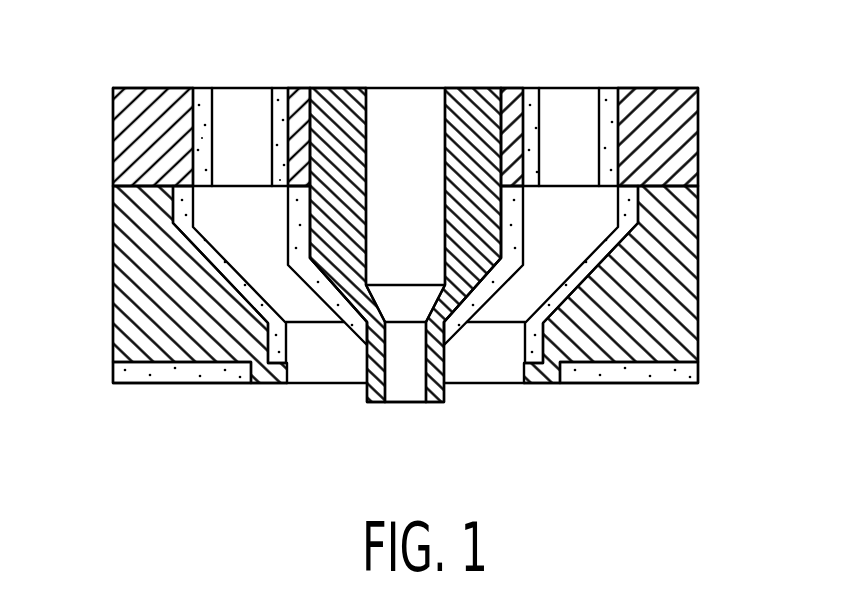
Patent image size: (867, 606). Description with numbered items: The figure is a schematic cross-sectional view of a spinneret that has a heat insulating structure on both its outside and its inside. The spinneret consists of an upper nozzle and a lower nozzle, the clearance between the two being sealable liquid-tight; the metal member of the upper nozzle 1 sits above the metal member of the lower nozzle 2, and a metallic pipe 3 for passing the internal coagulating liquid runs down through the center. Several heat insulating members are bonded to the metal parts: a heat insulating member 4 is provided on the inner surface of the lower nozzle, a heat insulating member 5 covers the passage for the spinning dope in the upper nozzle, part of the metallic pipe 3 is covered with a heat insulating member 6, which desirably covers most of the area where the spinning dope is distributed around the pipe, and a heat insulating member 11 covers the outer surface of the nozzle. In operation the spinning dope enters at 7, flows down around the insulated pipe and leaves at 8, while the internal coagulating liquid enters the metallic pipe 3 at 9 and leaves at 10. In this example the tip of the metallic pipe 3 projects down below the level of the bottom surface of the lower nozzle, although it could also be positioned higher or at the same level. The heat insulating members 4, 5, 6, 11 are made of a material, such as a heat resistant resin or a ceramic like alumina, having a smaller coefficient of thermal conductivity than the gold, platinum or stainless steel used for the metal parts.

The metal member of the upper nozzle 1 is at (145, 148).
The metal member of the lower nozzle 2 is at (140, 298).
The metallic pipe 3 is at (463, 88).
The heat insulating member 4 is at (287, 343).
The heat insulating member 5 is at (202, 98).
The heat insulating member 6 is at (298, 228).
The spinning dope inlet 7 is at (243, 102).
The spinning dope outlet 8 is at (328, 374).
The internal coagulating liquid inlet 9 is at (405, 100).
The internal coagulating liquid outlet 10 is at (404, 383).
The heat insulating member 11 is at (212, 372).